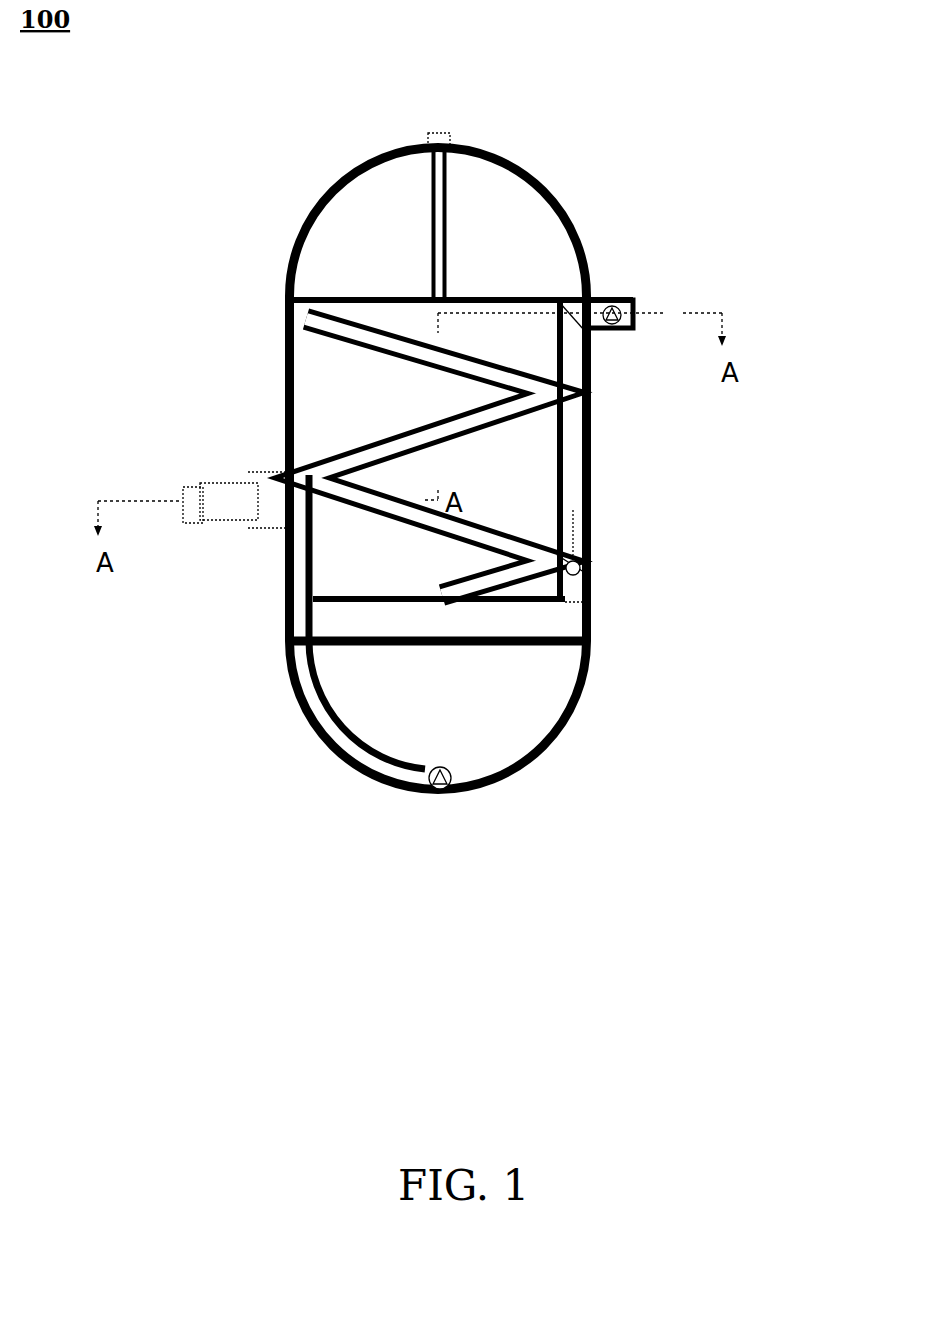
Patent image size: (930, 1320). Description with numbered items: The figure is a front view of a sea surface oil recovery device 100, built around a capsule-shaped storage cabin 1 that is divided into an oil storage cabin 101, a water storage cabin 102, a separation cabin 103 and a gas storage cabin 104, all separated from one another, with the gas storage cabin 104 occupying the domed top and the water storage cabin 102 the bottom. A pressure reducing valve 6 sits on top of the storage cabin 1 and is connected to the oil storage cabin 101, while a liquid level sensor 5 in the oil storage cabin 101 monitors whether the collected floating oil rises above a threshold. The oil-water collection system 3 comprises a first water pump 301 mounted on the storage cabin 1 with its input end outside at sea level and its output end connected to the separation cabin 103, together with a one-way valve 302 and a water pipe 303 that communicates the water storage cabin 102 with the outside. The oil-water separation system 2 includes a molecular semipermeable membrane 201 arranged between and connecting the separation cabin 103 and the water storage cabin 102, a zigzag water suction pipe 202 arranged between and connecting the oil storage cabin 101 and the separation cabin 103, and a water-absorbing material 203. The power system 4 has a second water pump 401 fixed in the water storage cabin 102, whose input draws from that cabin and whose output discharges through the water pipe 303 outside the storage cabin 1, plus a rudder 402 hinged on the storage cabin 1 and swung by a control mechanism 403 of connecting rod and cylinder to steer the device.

The water treatment device 100 is at (438, 469).
The storage cabin 1 is at (301, 469).
The oil storage cabin 101 is at (330, 375).
The water storage cabin 102 is at (350, 707).
The separation cabin 103 is at (330, 617).
The gas storage cabin 104 is at (340, 240).
The oil-water separation system 2 is at (486, 664).
The molecular semipermeable membrane 201 is at (527, 648).
The water suction pipe 202 is at (480, 434).
The water-absorbing material 203 is at (557, 410).
The oil-water collection system 3 is at (687, 773).
The first water pump 301 is at (617, 323).
The one-way valve 302 is at (583, 548).
The water pipe 303 is at (460, 755).
The power system 4 is at (450, 796).
The second water pump 401 is at (420, 797).
The rudder 402 is at (220, 510).
The control mechanism 403 is at (285, 478).
The liquid level sensor 5 is at (562, 325).
The pressure reducing valve 6 is at (448, 142).